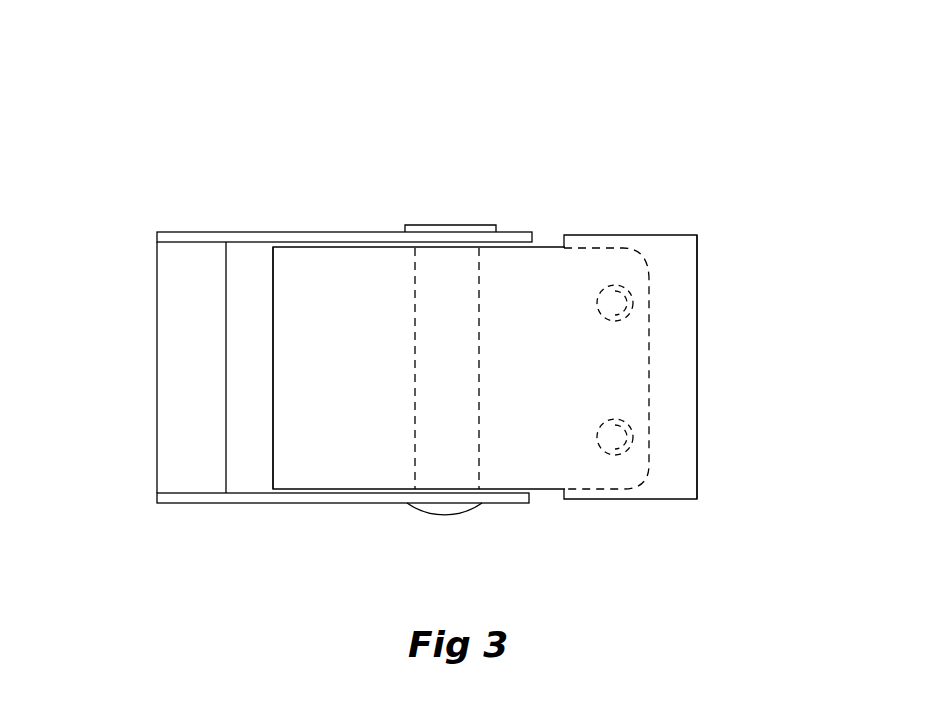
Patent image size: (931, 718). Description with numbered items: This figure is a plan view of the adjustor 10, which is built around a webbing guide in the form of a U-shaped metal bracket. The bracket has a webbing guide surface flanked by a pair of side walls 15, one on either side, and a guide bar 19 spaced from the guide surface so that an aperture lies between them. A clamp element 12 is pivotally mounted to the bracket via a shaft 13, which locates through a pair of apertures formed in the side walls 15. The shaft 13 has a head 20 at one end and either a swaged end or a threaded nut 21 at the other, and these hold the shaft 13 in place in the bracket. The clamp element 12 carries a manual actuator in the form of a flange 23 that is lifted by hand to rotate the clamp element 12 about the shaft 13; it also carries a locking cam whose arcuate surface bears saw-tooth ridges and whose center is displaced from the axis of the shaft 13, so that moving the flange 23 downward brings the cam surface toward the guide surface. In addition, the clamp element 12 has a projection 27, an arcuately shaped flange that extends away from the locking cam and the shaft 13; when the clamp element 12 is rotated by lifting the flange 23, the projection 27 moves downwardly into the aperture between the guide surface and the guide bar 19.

The adjustor 10 is at (500, 165).
The clamp element 12 is at (662, 220).
The shaft 13 is at (428, 448).
The side walls 15 is at (210, 232).
The guide bar 19 is at (185, 352).
The head 20 is at (453, 508).
The swaged end or threaded nut 21 is at (420, 226).
The flange 23 is at (697, 402).
The projection 27 is at (268, 443).